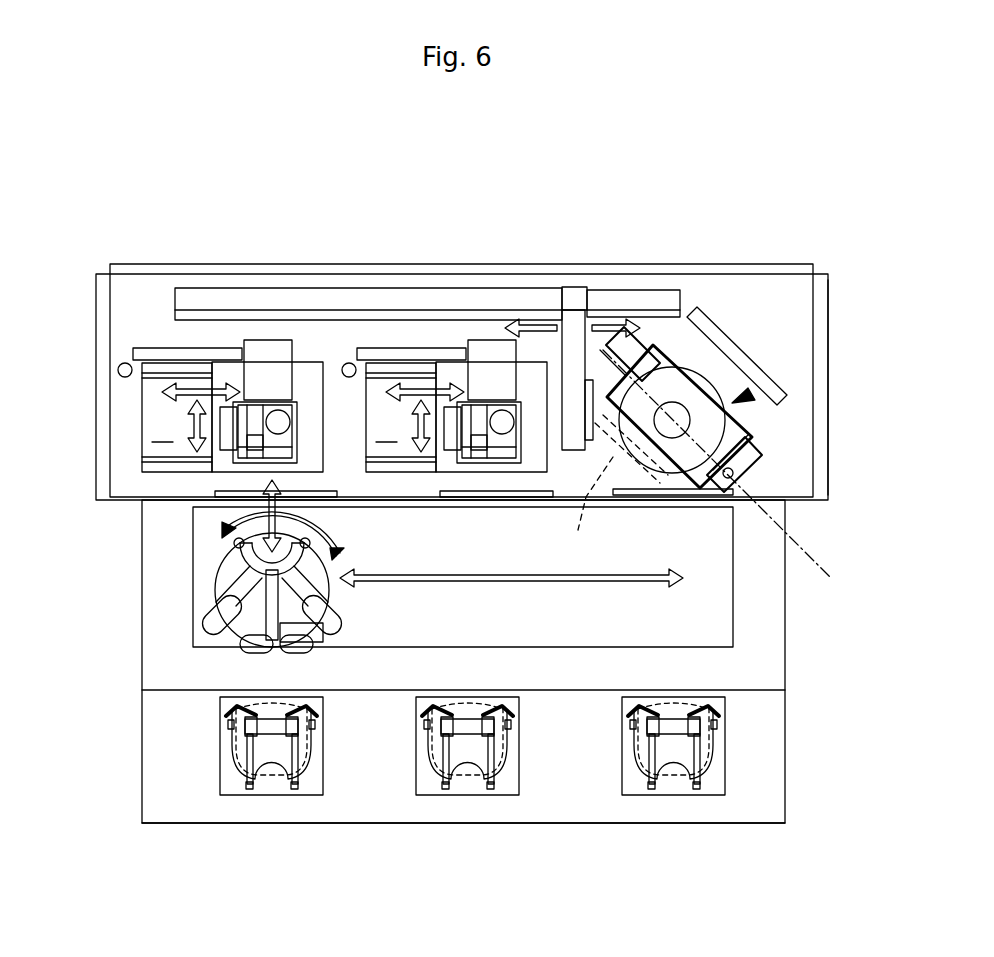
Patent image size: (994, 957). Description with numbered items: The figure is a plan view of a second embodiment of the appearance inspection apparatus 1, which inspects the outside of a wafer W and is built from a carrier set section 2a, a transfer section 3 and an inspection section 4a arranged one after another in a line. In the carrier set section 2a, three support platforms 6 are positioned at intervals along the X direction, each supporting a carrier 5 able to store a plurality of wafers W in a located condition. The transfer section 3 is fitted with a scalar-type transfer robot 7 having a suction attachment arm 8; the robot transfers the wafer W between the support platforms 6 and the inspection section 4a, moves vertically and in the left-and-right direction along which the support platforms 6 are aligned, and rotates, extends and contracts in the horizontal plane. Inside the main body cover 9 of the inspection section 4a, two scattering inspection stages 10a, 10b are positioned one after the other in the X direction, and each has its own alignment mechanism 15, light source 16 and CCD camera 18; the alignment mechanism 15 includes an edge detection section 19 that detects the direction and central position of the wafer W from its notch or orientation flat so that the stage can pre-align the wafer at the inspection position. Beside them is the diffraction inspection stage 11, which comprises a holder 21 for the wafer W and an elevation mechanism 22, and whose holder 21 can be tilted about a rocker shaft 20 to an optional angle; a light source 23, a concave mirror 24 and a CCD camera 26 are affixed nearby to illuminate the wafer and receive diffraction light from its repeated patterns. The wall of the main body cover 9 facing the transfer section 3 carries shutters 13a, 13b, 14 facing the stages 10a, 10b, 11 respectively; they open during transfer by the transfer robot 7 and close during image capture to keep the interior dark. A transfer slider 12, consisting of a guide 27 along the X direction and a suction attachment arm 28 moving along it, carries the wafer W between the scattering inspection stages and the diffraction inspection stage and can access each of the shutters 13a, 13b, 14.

The appearance inspection apparatus 1 is at (128, 835).
The carrier set section 2a is at (128, 738).
The transfer section 3 is at (132, 583).
The inspection section 4a is at (88, 322).
The carrier 5 is at (309, 780).
The support platform 6 is at (228, 797).
The transfer robot 7 is at (190, 563).
The suction attachment arm 8 is at (240, 560).
The main body cover 9 is at (828, 312).
The scattering inspection stage 10a is at (281, 430).
The scattering inspection stage 10b is at (468, 340).
The diffraction inspection stage 11 is at (758, 360).
The transfer slider 12 is at (216, 282).
The shutter 13a is at (315, 488).
The shutter 13b is at (462, 488).
The shutter 14 is at (638, 489).
The alignment mechanism 15 is at (404, 316).
The edge detection section 19 is at (272, 340).
The light source 16 is at (160, 347).
The CCD camera 18 is at (125, 362).
The rocker shaft 20 is at (736, 477).
The holder 21 is at (712, 377).
The elevation mechanism 22 is at (677, 408).
The light source 23 is at (668, 355).
The concave mirror 24 is at (614, 489).
The CCD camera 26 is at (740, 478).
The guide 27 is at (628, 290).
The suction attachment arm 28 is at (574, 365).
The wafer W is at (272, 810).